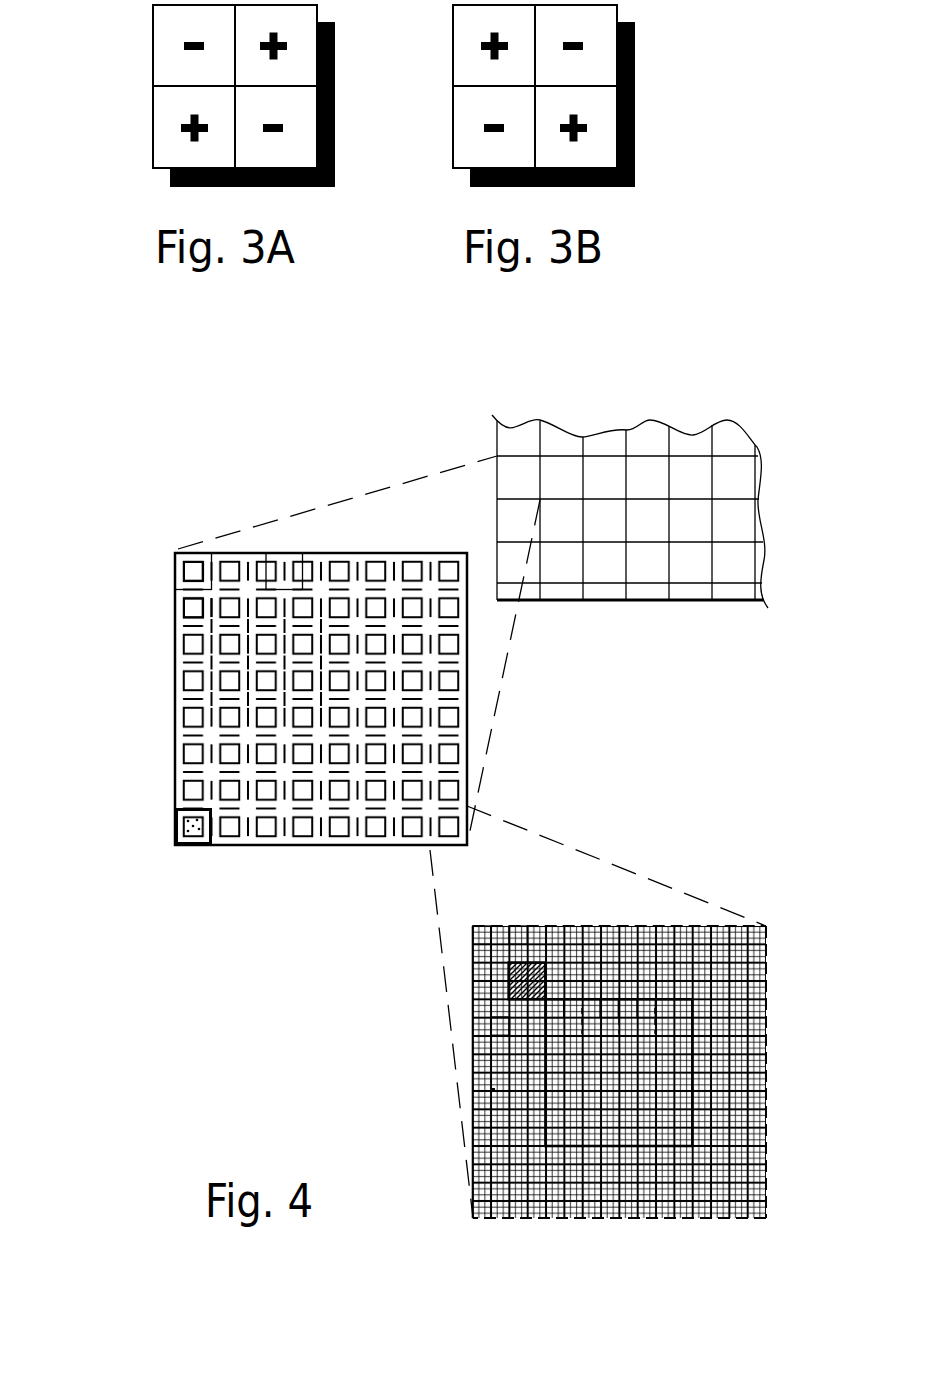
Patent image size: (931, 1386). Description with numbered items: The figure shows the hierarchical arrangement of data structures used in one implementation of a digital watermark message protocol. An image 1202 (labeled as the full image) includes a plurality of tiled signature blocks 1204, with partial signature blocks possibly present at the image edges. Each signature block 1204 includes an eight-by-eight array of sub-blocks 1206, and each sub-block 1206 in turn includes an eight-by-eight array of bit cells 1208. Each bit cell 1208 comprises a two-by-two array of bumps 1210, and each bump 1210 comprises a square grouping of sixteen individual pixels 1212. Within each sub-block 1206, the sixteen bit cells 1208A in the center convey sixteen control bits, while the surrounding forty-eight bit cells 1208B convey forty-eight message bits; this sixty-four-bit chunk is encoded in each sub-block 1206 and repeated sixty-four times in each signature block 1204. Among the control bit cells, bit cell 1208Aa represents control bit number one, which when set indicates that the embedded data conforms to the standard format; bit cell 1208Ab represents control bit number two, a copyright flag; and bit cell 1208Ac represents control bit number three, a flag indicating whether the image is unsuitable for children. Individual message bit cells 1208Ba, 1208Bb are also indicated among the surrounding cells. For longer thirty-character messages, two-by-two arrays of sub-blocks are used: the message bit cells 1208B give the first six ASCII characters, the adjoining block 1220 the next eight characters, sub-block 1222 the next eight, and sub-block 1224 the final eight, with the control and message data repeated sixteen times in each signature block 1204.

The image 1202 is at (566, 605).
The signature block 1204 is at (274, 848).
The sub-block 1206 is at (651, 1222).
The bit cell 1208 is at (508, 975).
The control bit cells 1208A is at (192, 566).
The message bit cells 1208B is at (178, 548).
The bit cell for control bit one 1208Aa is at (558, 1004).
The bit cell for control bit two 1208Ab is at (607, 1004).
The bit cell for control bit three 1208Ac is at (648, 1004).
The sub-block cell a 1208Ba is at (482, 930).
The sub-block cell b 1208Bb is at (520, 929).
The bump 1210 is at (491, 1025).
The pixel 1212 is at (491, 1088).
The adjoining block 1220 is at (280, 551).
The sub-block 1222 is at (183, 602).
The sub-block 1224 is at (221, 610).